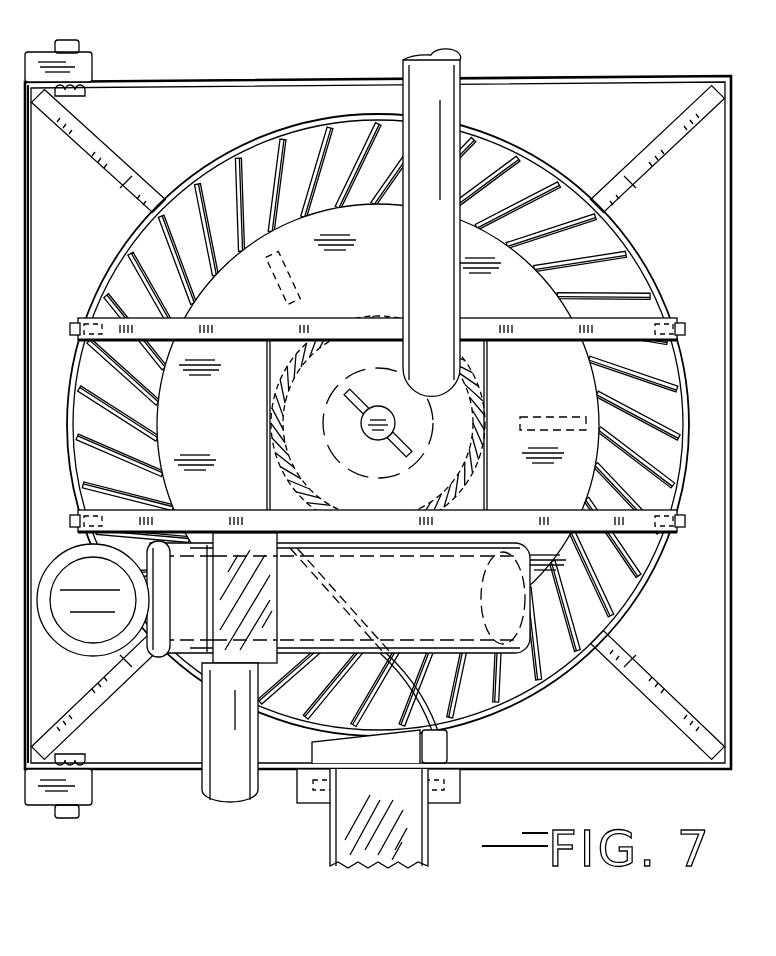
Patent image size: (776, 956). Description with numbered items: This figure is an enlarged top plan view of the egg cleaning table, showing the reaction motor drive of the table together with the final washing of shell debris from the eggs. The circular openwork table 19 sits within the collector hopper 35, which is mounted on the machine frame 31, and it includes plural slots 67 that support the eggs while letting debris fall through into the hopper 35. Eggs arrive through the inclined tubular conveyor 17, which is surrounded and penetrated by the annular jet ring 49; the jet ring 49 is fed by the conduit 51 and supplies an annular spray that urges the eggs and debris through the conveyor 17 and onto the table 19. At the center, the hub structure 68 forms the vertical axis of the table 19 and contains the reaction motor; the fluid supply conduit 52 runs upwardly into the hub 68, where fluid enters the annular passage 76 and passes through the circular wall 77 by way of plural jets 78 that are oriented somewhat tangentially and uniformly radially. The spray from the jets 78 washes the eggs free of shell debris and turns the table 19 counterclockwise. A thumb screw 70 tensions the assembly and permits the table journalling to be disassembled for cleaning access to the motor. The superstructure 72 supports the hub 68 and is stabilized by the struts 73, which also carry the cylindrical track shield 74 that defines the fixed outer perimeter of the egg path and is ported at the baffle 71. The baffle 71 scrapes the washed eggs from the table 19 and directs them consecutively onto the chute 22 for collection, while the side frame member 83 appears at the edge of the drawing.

The tubular conveyor 17 is at (283, 599).
The openwork table 19 is at (662, 227).
The chute 22 is at (424, 840).
The machine frame 31 is at (45, 798).
The collector hopper 35 is at (630, 86).
The jet ring 49 is at (222, 655).
The conduit 51 is at (222, 806).
The fluid supply conduit 52 is at (446, 100).
The slots 67 is at (656, 388).
The hub structure 68 is at (375, 308).
The thumb screw 70 is at (378, 410).
The baffle 71 is at (462, 712).
The superstructure 72 is at (678, 323).
The struts 73 is at (648, 680).
The cylindrical track shield 74 is at (684, 462).
The annular passage 76 is at (278, 410).
The circular wall 77 is at (300, 474).
The jets 78 is at (300, 322).
The side frame member 83 is at (27, 372).